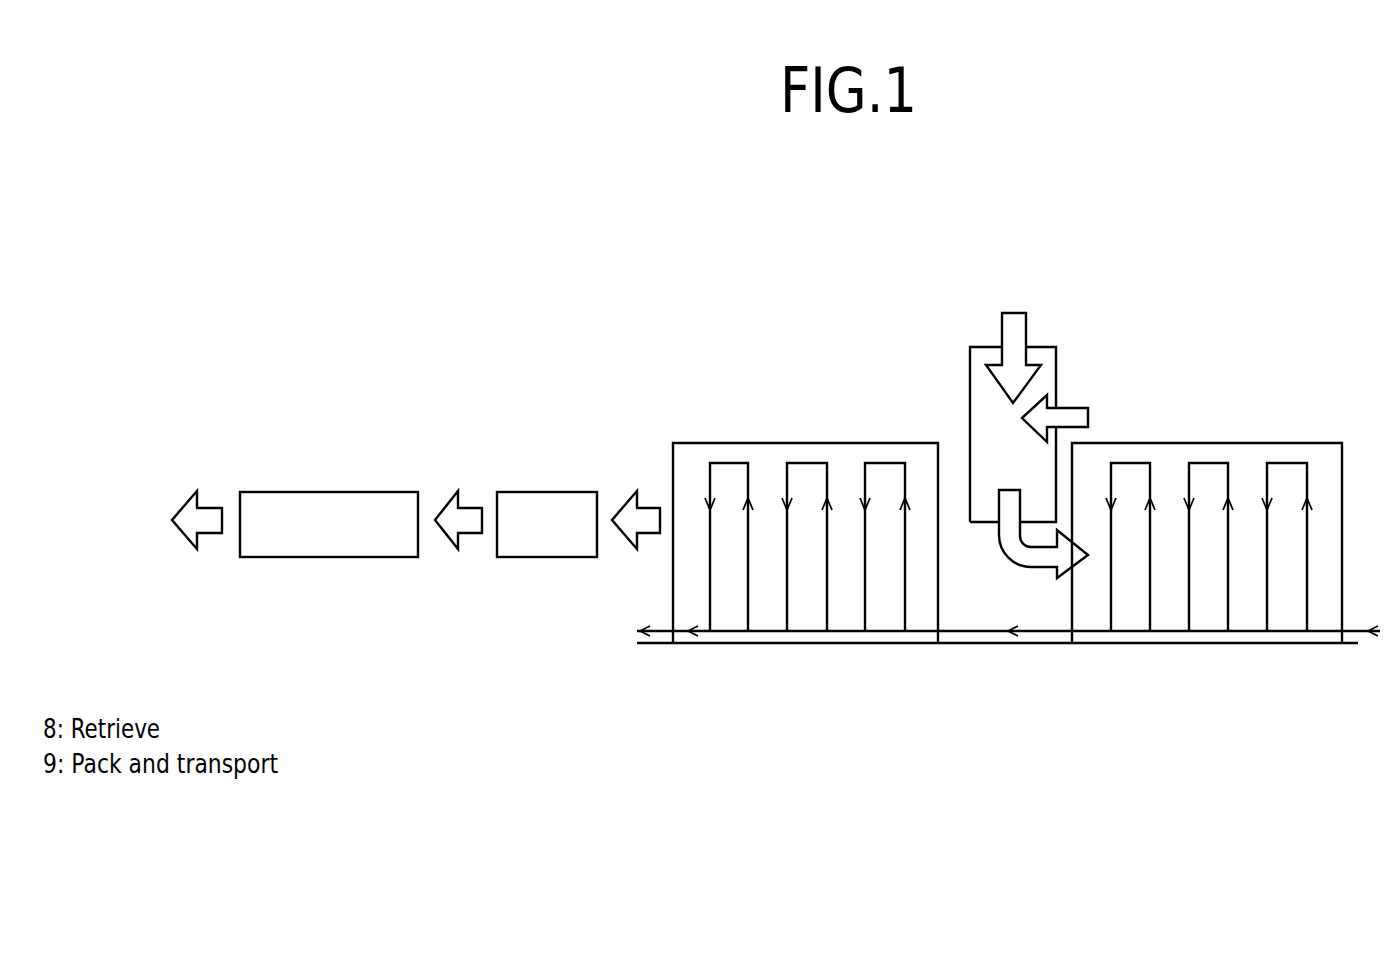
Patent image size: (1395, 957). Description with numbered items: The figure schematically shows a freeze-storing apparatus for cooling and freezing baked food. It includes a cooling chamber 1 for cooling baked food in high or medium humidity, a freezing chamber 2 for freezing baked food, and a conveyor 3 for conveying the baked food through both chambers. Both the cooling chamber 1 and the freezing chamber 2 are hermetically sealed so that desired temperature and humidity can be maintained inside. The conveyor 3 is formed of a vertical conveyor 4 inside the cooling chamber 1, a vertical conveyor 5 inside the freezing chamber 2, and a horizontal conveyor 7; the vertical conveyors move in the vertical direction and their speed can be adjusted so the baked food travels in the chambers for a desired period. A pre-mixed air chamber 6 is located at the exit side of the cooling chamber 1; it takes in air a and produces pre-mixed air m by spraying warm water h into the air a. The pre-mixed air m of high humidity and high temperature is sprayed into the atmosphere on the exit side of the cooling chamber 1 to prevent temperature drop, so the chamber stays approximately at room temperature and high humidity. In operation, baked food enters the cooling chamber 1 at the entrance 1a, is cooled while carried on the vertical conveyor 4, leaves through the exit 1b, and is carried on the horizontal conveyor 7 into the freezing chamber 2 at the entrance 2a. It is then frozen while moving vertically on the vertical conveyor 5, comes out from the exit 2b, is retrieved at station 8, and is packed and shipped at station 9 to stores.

The cooling chamber 1 is at (1237, 443).
The entrance 1a is at (1337, 632).
The exit 1b is at (1073, 633).
The freezing chamber 2 is at (707, 443).
The entrance 2a is at (933, 632).
The exit 2b is at (673, 632).
The conveyor 3 is at (1347, 627).
The vertical conveyor 4 is at (1307, 483).
The vertical conveyor 5 is at (803, 463).
The pre-mixed air chamber 6 is at (975, 347).
The horizontal conveyor 7 is at (983, 643).
The station 8 is at (537, 492).
The station 9 is at (322, 492).
The air a is at (1012, 313).
The warm water h is at (1075, 408).
The pre-mixed air m is at (1002, 545).